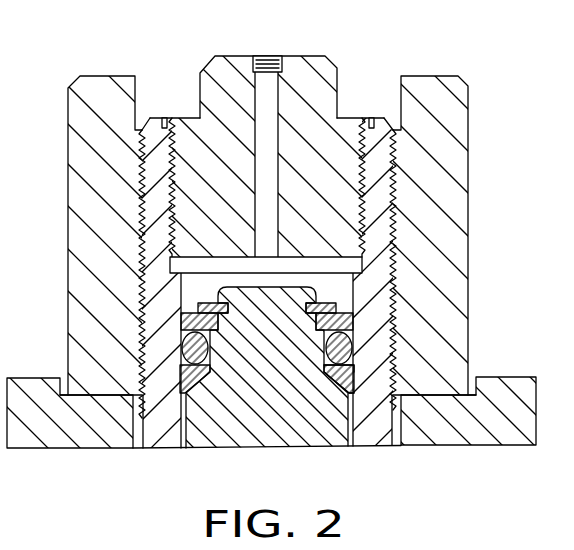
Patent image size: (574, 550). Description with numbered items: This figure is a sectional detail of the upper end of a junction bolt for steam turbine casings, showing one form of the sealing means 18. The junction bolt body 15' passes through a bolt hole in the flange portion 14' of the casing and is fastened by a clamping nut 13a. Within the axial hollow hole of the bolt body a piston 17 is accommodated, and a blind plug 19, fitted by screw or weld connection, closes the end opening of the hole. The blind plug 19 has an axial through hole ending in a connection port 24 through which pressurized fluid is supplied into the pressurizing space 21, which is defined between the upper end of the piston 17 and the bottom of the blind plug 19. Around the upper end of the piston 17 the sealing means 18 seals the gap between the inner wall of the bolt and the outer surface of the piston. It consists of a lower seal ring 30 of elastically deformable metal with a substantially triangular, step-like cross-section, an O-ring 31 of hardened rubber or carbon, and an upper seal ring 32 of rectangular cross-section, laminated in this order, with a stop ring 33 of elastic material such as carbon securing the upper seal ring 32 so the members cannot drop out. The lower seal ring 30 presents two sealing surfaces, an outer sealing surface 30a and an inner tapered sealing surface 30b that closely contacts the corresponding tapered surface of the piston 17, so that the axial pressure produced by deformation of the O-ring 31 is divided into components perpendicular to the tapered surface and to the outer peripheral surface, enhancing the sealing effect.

The clamping nut 13a is at (466, 90).
The flange portion 14' is at (287, 275).
The junction bolt body 15' is at (255, 446).
The piston 17 is at (252, 432).
The sealing means 18 is at (353, 318).
The blind plug 19 is at (322, 72).
The pressurizing space 21 is at (187, 265).
The connection port 24 is at (258, 58).
The lower seal ring 30 is at (347, 372).
The outer sealing surface 30a is at (355, 390).
The inner tapered sealing surface 30b is at (337, 373).
The O-ring 31 is at (345, 347).
The upper seal ring 32 is at (183, 318).
The stop ring 33 is at (203, 307).